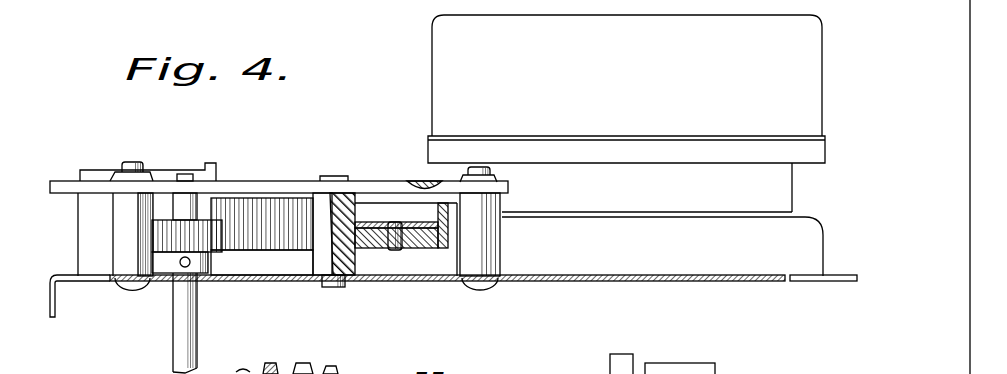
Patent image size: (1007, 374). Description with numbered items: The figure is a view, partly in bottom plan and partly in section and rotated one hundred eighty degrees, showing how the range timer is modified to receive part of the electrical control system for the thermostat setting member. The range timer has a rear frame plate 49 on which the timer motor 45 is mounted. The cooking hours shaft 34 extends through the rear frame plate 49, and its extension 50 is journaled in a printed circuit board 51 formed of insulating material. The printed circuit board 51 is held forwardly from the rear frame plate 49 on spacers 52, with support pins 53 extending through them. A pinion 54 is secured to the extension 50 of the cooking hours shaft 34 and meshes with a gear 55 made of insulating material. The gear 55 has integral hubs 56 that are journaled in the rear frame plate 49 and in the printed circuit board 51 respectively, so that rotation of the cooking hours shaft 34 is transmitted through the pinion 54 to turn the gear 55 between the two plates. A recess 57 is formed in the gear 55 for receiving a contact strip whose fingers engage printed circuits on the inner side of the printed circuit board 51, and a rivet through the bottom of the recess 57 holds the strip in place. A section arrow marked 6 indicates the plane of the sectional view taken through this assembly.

The cooking hours shaft 34 is at (172, 348).
The timer motor 45 is at (416, 52).
The rear frame plate 49 is at (538, 283).
The extension 50 is at (200, 207).
The printed circuit board 51 is at (284, 182).
The spacers 52 is at (120, 258).
The support pins 53 is at (132, 163).
The pinion 54 is at (210, 250).
The gear 55 is at (292, 247).
The integral hubs 56 is at (336, 180).
The recess 57 is at (395, 206).
The section line 6 is at (284, 334).